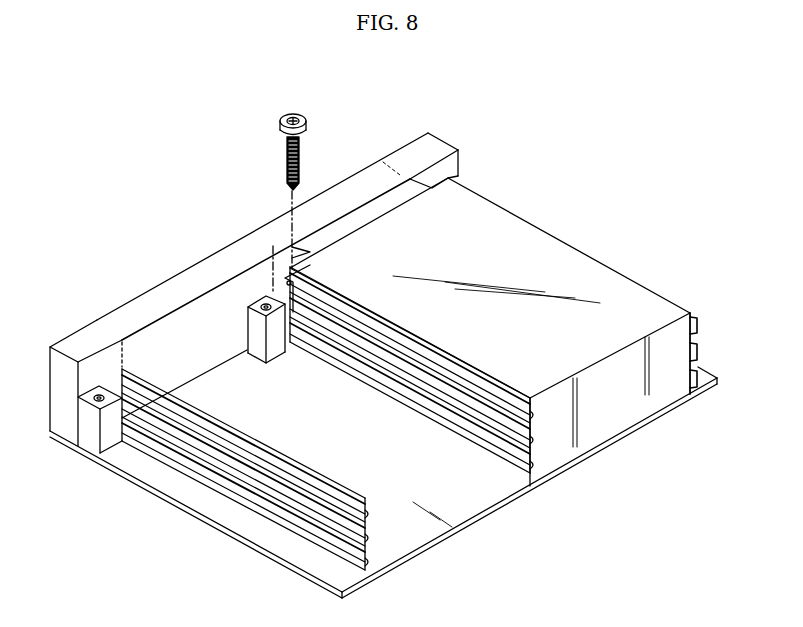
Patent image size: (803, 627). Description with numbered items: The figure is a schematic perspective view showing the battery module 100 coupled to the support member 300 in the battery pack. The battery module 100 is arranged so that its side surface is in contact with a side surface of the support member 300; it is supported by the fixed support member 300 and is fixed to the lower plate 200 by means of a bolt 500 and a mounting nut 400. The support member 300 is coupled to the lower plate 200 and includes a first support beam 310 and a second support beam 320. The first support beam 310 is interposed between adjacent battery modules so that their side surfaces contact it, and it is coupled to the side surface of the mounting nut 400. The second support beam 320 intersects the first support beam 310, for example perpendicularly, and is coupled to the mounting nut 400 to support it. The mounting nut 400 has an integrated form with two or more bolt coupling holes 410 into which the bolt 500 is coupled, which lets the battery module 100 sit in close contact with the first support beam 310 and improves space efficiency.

The battery module 100 is at (553, 251).
The lower plate 200 is at (417, 532).
The support member 300 is at (473, 113).
The first support beam 310 is at (515, 463).
The second support beam 320 is at (362, 183).
The mounting nut 400 is at (255, 330).
The bolt coupling hole 410 is at (265, 302).
The bolt 500 is at (283, 121).